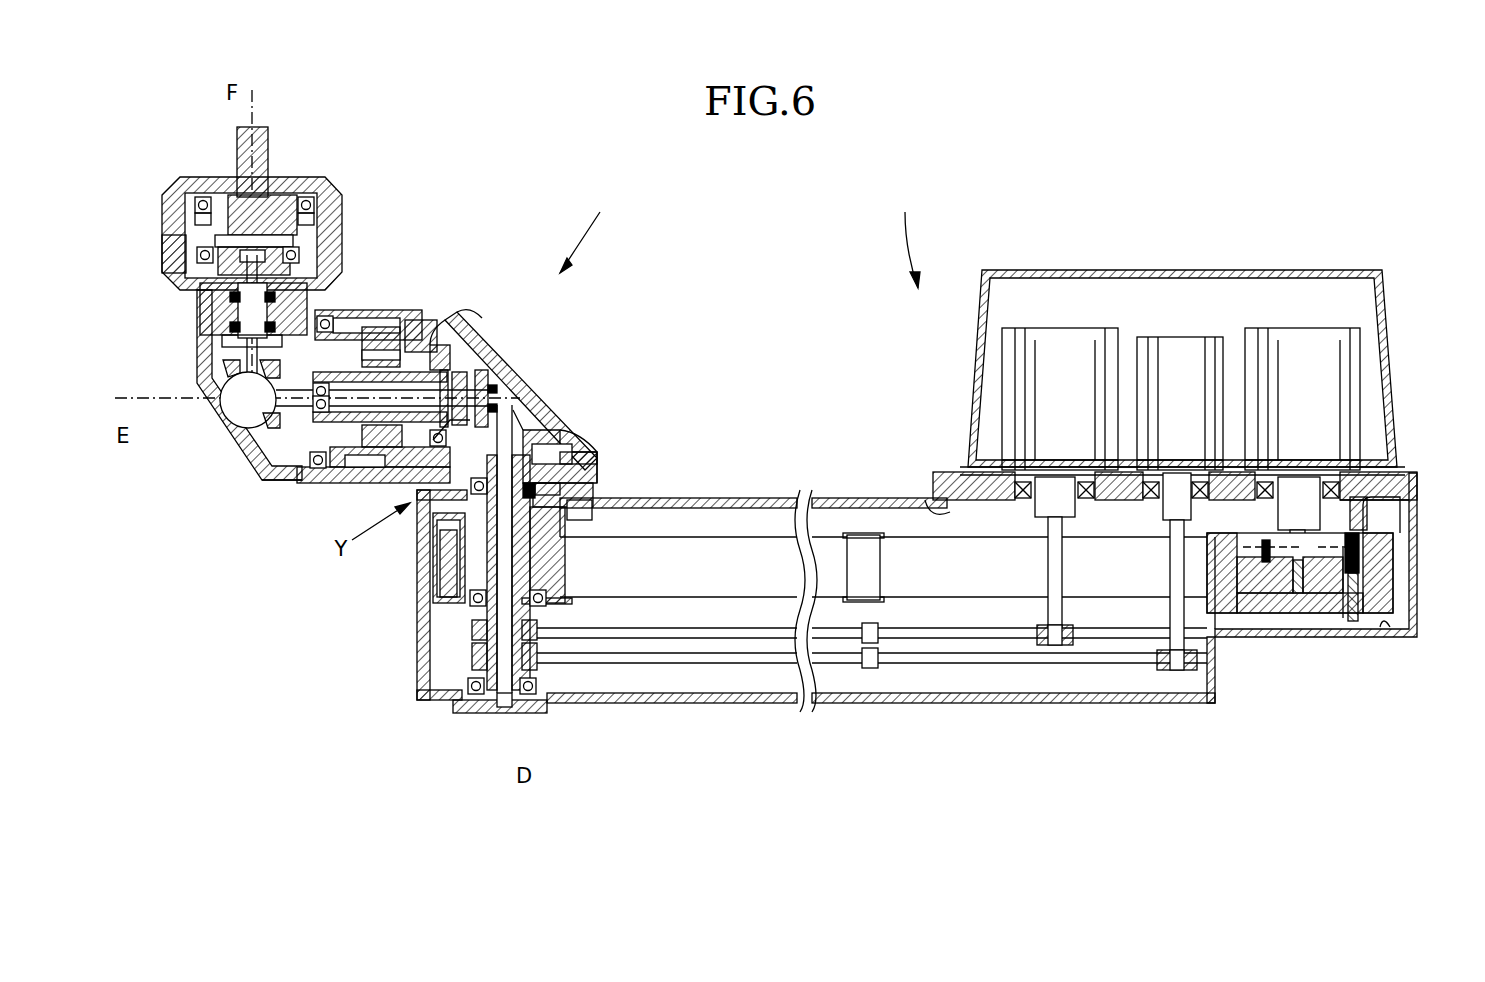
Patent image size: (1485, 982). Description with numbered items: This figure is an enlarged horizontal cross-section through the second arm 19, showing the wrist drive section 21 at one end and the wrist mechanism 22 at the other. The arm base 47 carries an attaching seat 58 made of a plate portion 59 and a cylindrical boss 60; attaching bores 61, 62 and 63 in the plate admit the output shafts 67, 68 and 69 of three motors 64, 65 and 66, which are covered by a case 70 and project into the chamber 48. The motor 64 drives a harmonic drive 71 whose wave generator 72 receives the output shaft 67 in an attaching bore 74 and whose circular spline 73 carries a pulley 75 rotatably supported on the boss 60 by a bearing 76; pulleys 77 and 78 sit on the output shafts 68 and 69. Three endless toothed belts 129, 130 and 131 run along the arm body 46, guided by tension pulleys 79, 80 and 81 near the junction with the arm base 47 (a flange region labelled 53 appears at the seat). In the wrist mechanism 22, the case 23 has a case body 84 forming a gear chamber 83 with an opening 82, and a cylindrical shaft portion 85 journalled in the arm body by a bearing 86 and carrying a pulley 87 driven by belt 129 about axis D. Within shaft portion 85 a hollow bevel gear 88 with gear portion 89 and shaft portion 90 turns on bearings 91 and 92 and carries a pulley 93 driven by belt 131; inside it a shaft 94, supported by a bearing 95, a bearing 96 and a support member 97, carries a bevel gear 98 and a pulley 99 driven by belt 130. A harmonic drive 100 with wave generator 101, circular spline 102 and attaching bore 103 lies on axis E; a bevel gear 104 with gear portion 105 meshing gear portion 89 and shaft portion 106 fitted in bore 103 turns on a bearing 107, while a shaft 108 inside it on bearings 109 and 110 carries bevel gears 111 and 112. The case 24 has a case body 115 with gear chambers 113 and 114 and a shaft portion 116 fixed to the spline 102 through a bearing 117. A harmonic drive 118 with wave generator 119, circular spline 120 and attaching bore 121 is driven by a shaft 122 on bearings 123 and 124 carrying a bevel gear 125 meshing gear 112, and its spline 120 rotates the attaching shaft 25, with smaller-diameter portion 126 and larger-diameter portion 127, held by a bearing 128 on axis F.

The second arm 19 is at (750, 498).
The wrist drive section 21 is at (893, 208).
The wrist mechanism 22 is at (614, 208).
The case 23 is at (520, 398).
The case 24 is at (236, 453).
The attaching shaft 25 is at (270, 139).
The arm body 46 is at (680, 704).
The arm base 47 is at (950, 704).
The chamber 48 is at (1382, 632).
The flange 53 is at (935, 500).
The attaching seat 58 is at (1417, 480).
The plate portion 59 is at (1412, 496).
The cylindrical boss 60 is at (1392, 525).
The attaching bore 61 is at (1264, 482).
The attaching bore 62 is at (1151, 482).
The attaching bore 63 is at (1023, 482).
The motor 64 is at (1297, 335).
The motor 65 is at (1178, 345).
The motor 66 is at (1060, 335).
The output shaft 67 is at (1298, 515).
The output shaft 68 is at (1177, 482).
The output shaft 69 is at (1055, 482).
The case 70 is at (1240, 270).
The harmonic drive 71 is at (1393, 580).
The wave generator 72 is at (1275, 615).
The circular spline 73 is at (1240, 615).
The attaching bore 74 is at (1320, 615).
The pulley 75 is at (1362, 605).
The bearing 76 is at (1362, 555).
The pulley 77 is at (1157, 660).
The pulley 78 is at (1075, 636).
The tension pulleys 79 is at (882, 566).
The tension pulleys 80 is at (866, 670).
The tension pulleys 81 is at (880, 632).
The opening 82 is at (348, 318).
The gear chamber 83 is at (455, 320).
The case body 84 is at (578, 432).
The cylindrical shaft portion 85 is at (565, 522).
The bearing 86 is at (595, 496).
The pulley 87 is at (445, 560).
The bevel gear 88 is at (602, 473).
The gear portion 89 is at (592, 462).
The cylindrical shaft portion 90 is at (428, 605).
The bearing 91 is at (588, 482).
The bearing 92 is at (540, 600).
The pulley 93 is at (472, 632).
The shaft 94 is at (470, 686).
The bearing 95 is at (575, 447).
The bearing 96 is at (470, 714).
The support member 97 is at (535, 714).
The bevel gear 98 is at (558, 420).
The pulley 99 is at (472, 657).
The harmonic drive 100 is at (402, 335).
The wave generator 101 is at (424, 330).
The circular spline 102 is at (372, 330).
The attaching bore 103 is at (352, 466).
The bevel gear 104 is at (472, 325).
The gear portion 105 is at (480, 334).
The cylindrical shaft portion 106 is at (345, 375).
The bearing 107 is at (476, 484).
The shaft 108 is at (492, 382).
The bearing 109 is at (482, 360).
The bearing 110 is at (295, 412).
The bevel gear 111 is at (545, 428).
The bevel gear 112 is at (268, 424).
The gear chamber 113 is at (230, 408).
The gear chamber 114 is at (186, 247).
The case body 115 is at (200, 368).
The cylindrical shaft portion 116 is at (382, 464).
The bearing 117 is at (312, 472).
The harmonic drive 118 is at (318, 262).
The wave generator 119 is at (212, 297).
The circular spline 120 is at (330, 235).
The attaching bore 121 is at (325, 222).
The shaft 122 is at (232, 346).
The bearing 123 is at (230, 300).
The bearing 124 is at (232, 330).
The bevel gear 125 is at (222, 392).
The smaller-diameter portion 126 is at (232, 145).
The larger-diameter portion 127 is at (188, 222).
The bearing 128 is at (318, 205).
The endless toothed belt 129 is at (712, 592).
The endless toothed belt 130 is at (785, 666).
The endless toothed belt 131 is at (735, 642).